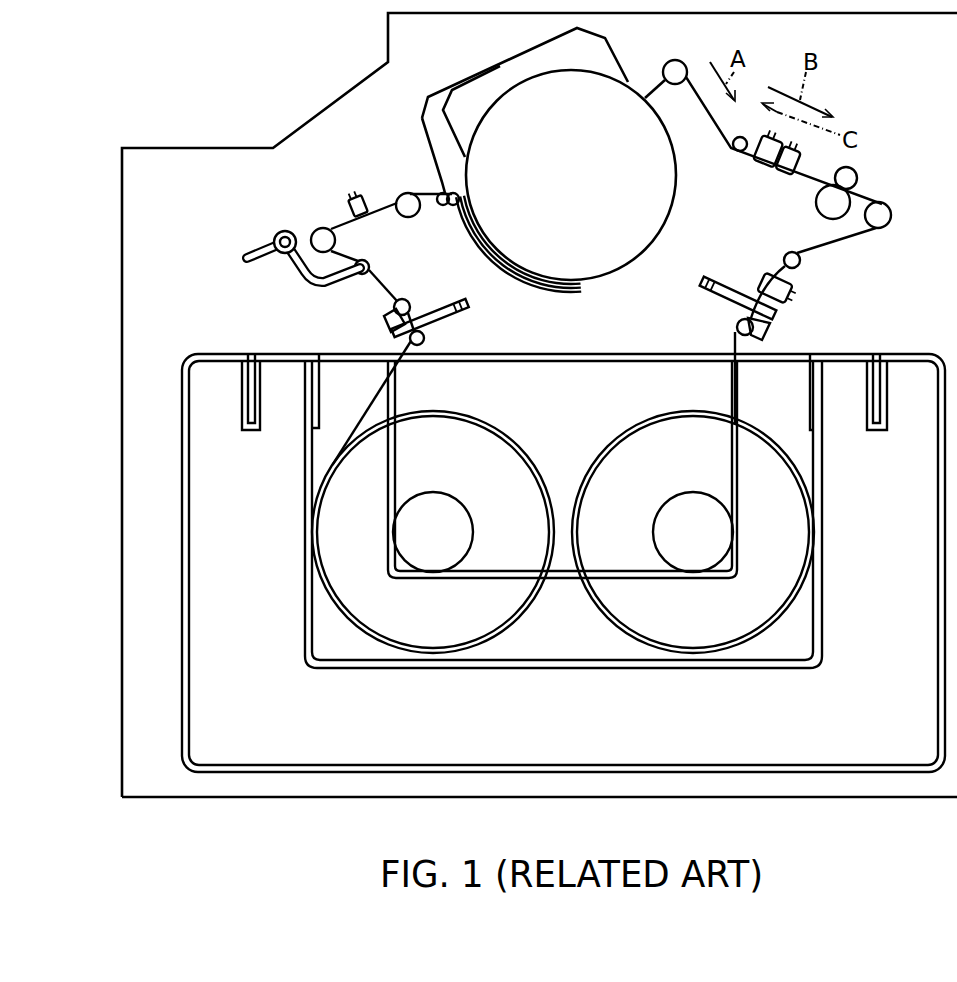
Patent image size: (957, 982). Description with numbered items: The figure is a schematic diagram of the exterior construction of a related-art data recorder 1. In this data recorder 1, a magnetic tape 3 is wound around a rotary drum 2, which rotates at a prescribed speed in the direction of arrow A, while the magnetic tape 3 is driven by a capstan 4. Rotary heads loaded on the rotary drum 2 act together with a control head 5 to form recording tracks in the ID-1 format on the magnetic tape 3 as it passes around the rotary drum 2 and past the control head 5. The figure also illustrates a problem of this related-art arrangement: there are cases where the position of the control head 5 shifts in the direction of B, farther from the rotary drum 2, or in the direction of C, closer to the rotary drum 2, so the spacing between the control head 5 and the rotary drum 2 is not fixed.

The data recorder 1 is at (207, 61).
The rotary drum 2 is at (620, 270).
The magnetic tape 3 is at (721, 137).
The capstan 4 is at (853, 176).
The control head 5 is at (769, 182).